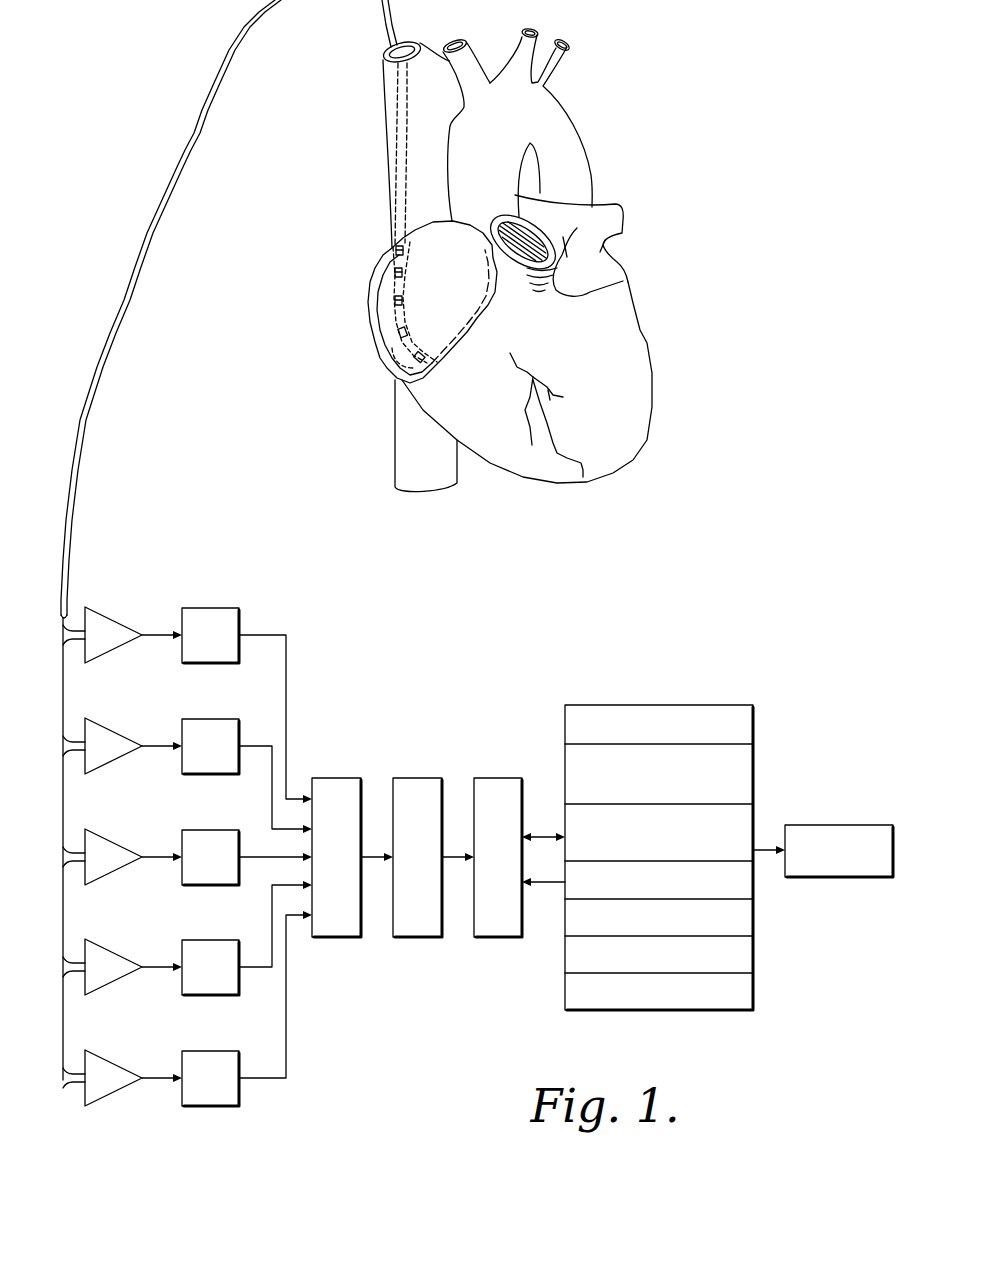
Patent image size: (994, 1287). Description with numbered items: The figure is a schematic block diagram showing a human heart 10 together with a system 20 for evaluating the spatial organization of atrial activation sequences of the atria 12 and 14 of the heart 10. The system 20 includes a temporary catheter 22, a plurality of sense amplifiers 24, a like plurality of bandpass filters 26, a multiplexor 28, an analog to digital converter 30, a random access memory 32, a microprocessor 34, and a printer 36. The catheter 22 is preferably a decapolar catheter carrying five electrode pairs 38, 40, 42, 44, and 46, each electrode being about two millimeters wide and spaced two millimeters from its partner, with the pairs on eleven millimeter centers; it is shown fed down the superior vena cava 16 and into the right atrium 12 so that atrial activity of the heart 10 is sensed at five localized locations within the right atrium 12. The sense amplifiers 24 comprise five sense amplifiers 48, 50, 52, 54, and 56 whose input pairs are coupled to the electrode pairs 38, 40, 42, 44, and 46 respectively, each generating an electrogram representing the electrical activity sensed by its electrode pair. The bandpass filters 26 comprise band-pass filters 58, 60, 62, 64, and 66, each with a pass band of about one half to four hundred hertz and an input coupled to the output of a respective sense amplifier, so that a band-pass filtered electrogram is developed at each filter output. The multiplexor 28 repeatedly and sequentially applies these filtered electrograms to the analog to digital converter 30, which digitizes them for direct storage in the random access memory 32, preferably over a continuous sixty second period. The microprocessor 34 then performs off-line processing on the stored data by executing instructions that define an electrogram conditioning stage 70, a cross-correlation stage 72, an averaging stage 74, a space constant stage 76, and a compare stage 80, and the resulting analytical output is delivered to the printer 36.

The heart 10 is at (660, 68).
The right atrium 12 is at (388, 287).
The atrium 14 is at (614, 269).
The superior vena cava 16 is at (397, 183).
The system 20 is at (100, 288).
The temporary catheter 22 is at (178, 163).
The sense amplifiers 24 is at (107, 1116).
The bandpass filters 26 is at (211, 1124).
The multiplexor 28 is at (338, 778).
The analog to digital converter 30 is at (420, 778).
The random access memory 32 is at (500, 778).
The microprocessor 34 is at (716, 705).
The printer 36 is at (838, 825).
The electrode pair 38 is at (390, 378).
The electrode pair 40 is at (392, 336).
The electrode pair 42 is at (392, 304).
The electrode pair 44 is at (397, 271).
The electrode pair 46 is at (397, 247).
The sense amplifier 48 is at (115, 1054).
The sense amplifier 50 is at (115, 944).
The sense amplifier 52 is at (115, 834).
The sense amplifier 54 is at (115, 723).
The sense amplifier 56 is at (115, 612).
The band-pass filter 58 is at (212, 1051).
The band-pass filter 60 is at (212, 940).
The band-pass filter 62 is at (212, 830).
The band-pass filter 64 is at (212, 719).
The band-pass filter 66 is at (212, 608).
The electrogram conditioning stage 70 is at (746, 768).
The cross-correlation stage 72 is at (643, 829).
The averaging stage 74 is at (746, 884).
The space constant stage 76 is at (746, 919).
The compare stage 80 is at (746, 956).